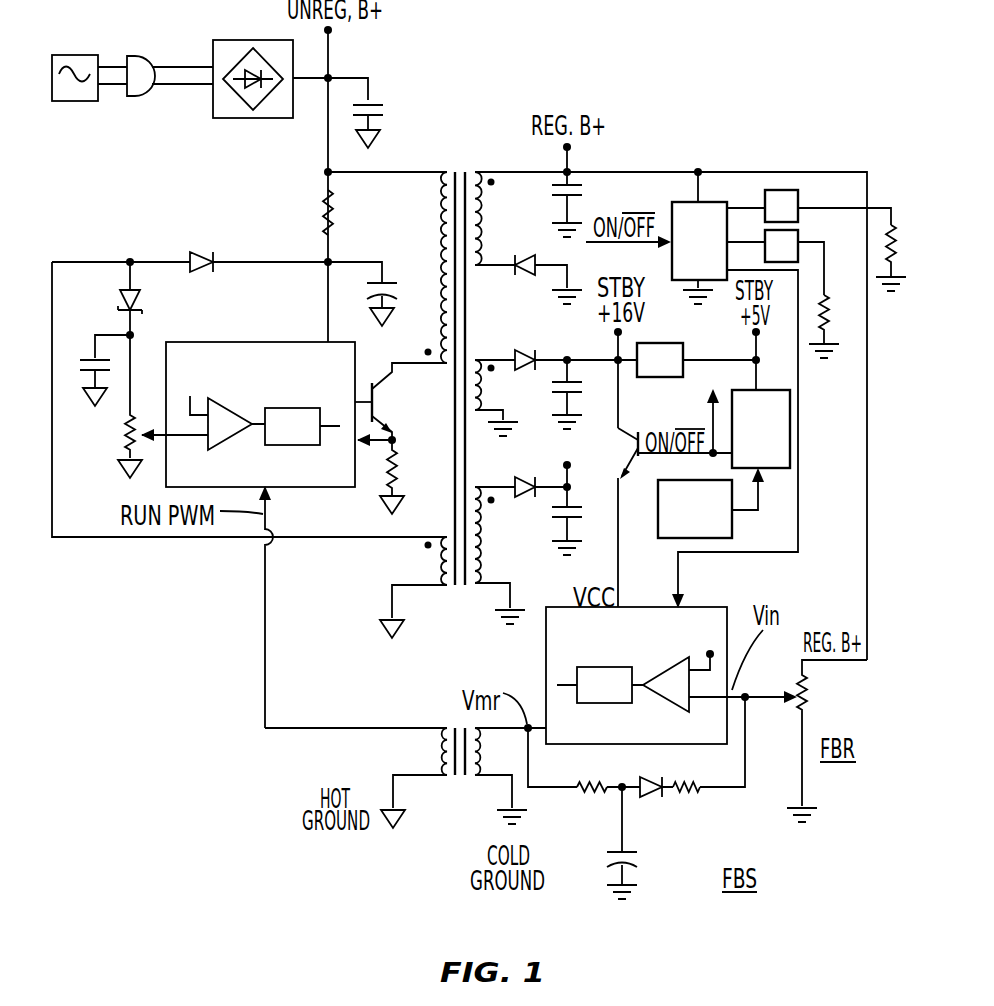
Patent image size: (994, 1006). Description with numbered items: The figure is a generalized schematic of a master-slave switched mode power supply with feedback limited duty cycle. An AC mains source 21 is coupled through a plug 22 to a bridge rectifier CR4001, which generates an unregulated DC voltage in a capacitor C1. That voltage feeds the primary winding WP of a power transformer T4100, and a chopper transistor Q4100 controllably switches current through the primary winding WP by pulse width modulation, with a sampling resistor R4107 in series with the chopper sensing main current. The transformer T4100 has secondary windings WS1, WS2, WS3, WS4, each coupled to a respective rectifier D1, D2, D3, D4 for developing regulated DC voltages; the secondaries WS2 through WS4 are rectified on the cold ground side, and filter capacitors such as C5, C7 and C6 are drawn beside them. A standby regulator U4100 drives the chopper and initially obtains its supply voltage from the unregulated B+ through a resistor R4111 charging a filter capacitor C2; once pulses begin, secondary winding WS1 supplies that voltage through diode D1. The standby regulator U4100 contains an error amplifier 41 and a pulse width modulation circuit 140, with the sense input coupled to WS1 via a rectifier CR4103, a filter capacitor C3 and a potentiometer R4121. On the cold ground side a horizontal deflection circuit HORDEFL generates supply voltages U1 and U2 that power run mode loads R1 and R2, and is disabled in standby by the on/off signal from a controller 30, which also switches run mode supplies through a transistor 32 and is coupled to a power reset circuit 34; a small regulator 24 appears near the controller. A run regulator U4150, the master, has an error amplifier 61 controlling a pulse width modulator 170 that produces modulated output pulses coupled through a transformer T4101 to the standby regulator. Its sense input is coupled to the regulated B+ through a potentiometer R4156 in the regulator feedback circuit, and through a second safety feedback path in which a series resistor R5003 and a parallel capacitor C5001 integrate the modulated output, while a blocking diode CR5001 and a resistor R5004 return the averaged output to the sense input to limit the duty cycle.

The AC mains source 21 is at (72, 55).
The plug 22 is at (134, 56).
The voltage regulator REG 24 is at (667, 343).
The controller 30 is at (762, 414).
The transistor 32 is at (624, 432).
The power reset circuit 34 is at (658, 512).
The error amplifier 41 is at (247, 400).
The error amplifier 61 is at (668, 706).
The pulse width modulation circuit 140 is at (292, 445).
The pulse width modulator of run regulator 170 is at (575, 668).
The bridge rectifier CR4001 is at (253, 97).
The capacitor C1 is at (371, 113).
The resistor R4111 is at (295, 214).
The diode D1 is at (201, 244).
The filter capacitor C2 is at (362, 294).
The rectifier CR4103 is at (168, 298).
The filter capacitor C3 is at (96, 367).
The potentiometer R4121 is at (138, 406).
The standby regulator U4100 is at (260, 434).
The chopper transistor Q4100 is at (401, 401).
The sampling resistor R4107 is at (413, 477).
The power transformer T4100 is at (429, 377).
The primary winding WP is at (387, 267).
The secondary winding WS1 is at (413, 587).
The secondary winding WS2 is at (502, 218).
The secondary winding WS3 is at (502, 398).
The secondary winding WS4 is at (502, 555).
The rectifier D2 is at (528, 283).
The filter capacitor C5 is at (551, 192).
The horizontal deflection circuit HORDEFL is at (699, 238).
The supply voltage U1 is at (781, 207).
The supply voltage U2 is at (781, 247).
The load R1 is at (900, 258).
The load R2 is at (833, 326).
The rectifier D3 is at (521, 343).
The filter capacitor C7 is at (582, 394).
The rectifier D4 is at (521, 470).
The filter capacitor C6 is at (582, 510).
The run regulator U4150 is at (619, 651).
The potentiometer R4156 is at (828, 741).
The transformer T4101 is at (458, 777).
The series resistor R5003 is at (589, 773).
The blocking diode CR5001 is at (663, 809).
The resistor R5004 is at (694, 773).
The parallel capacitor C5001 is at (648, 843).